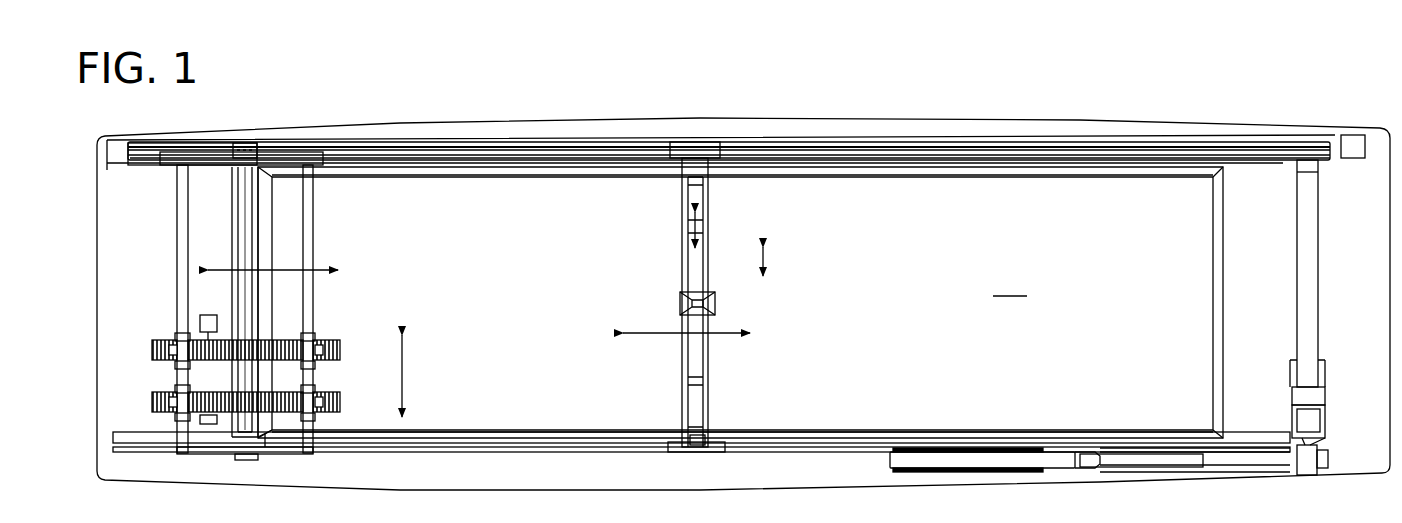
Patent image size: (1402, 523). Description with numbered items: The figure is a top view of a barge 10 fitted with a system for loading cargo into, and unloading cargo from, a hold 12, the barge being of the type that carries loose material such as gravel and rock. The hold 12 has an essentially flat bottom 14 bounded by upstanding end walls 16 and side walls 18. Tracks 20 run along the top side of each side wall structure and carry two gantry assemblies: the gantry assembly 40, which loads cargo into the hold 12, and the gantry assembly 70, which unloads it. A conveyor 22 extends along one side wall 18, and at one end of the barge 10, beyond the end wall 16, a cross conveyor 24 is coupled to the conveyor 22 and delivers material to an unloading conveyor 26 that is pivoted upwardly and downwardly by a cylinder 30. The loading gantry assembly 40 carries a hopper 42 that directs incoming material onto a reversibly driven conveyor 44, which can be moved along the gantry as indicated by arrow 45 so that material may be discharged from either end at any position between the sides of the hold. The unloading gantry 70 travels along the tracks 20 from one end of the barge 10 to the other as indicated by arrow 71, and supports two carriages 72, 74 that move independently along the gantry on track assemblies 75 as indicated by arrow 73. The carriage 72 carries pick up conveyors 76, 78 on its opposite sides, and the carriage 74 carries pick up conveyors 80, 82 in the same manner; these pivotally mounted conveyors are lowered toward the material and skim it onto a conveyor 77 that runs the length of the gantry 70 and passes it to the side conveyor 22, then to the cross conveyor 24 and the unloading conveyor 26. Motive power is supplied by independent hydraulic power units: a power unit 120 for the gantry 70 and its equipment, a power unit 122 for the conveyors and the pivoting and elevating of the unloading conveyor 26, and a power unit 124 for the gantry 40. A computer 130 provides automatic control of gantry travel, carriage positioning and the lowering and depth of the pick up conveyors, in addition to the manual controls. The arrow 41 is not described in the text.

The barge 10 is at (459, 124).
The hold 12 is at (1087, 185).
The flat bottom 14 is at (1011, 282).
The end walls 16 is at (270, 241).
The side walls 18 is at (900, 176).
The tracks 20 is at (516, 164).
The conveyor 22 is at (905, 148).
The cross conveyor 24 is at (1320, 272).
The unloading conveyor 26 is at (988, 466).
The cylinder 30 is at (1148, 460).
The gantry assembly 40 is at (699, 141).
The horizontal motion arrow 41 is at (656, 338).
The hopper 42 is at (718, 302).
The conveyor 44 is at (706, 266).
The arrow 45 is at (768, 258).
The gantry assembly 70 is at (301, 145).
The arrow 71 is at (285, 268).
The carriage 72 is at (288, 345).
The arrow 73 is at (404, 376).
The carriage 74 is at (293, 426).
The track assemblies 75 is at (177, 243).
The pick up conveyor 76 is at (323, 345).
The conveyor 77 is at (240, 238).
The pick up conveyor 78 is at (170, 342).
The pick up conveyor 80 is at (323, 400).
The pick up conveyor 82 is at (170, 395).
The power unit 120 is at (205, 425).
The power unit 122 is at (1353, 142).
The power unit 124 is at (698, 446).
The computer 130 is at (210, 315).